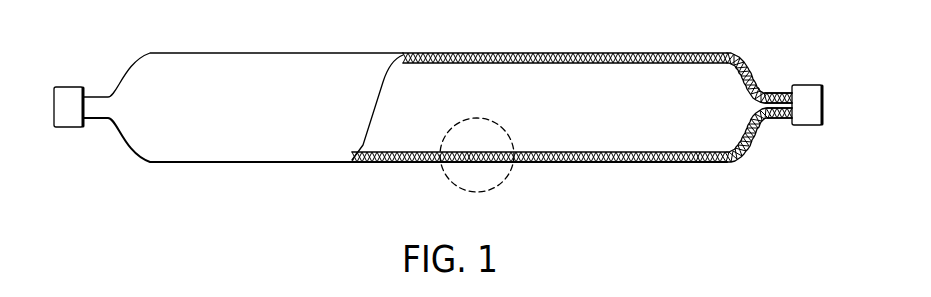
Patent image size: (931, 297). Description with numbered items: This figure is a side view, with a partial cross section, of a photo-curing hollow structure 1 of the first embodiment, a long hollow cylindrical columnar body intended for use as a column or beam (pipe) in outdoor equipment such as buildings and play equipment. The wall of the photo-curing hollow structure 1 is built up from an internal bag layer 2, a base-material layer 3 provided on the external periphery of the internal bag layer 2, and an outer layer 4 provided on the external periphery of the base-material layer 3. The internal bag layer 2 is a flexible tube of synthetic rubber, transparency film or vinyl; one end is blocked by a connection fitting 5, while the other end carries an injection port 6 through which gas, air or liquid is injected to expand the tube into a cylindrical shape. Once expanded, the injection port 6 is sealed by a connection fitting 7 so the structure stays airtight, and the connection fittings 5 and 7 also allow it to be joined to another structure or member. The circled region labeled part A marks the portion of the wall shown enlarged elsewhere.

The photo-curing hollow structure 1 is at (565, 52).
The internal bag layer 2 is at (600, 152).
The base-material layer 3 is at (678, 52).
The outer layer 4 is at (383, 163).
The connection fitting 5 is at (68, 87).
The injection port 6 is at (779, 118).
The connection fitting 7 is at (805, 85).
The part A is at (503, 182).